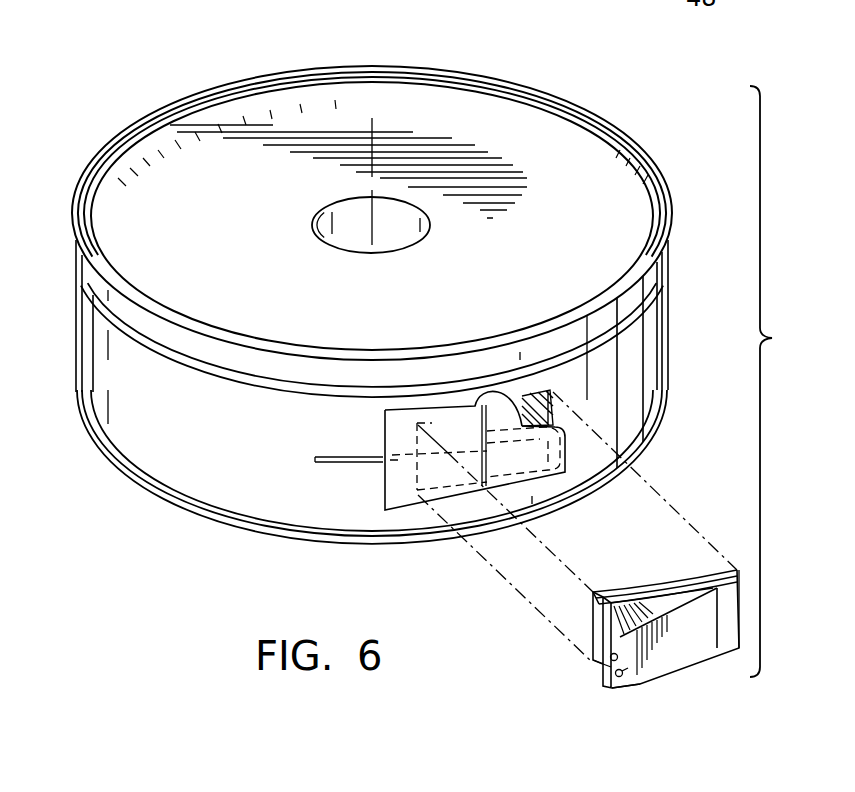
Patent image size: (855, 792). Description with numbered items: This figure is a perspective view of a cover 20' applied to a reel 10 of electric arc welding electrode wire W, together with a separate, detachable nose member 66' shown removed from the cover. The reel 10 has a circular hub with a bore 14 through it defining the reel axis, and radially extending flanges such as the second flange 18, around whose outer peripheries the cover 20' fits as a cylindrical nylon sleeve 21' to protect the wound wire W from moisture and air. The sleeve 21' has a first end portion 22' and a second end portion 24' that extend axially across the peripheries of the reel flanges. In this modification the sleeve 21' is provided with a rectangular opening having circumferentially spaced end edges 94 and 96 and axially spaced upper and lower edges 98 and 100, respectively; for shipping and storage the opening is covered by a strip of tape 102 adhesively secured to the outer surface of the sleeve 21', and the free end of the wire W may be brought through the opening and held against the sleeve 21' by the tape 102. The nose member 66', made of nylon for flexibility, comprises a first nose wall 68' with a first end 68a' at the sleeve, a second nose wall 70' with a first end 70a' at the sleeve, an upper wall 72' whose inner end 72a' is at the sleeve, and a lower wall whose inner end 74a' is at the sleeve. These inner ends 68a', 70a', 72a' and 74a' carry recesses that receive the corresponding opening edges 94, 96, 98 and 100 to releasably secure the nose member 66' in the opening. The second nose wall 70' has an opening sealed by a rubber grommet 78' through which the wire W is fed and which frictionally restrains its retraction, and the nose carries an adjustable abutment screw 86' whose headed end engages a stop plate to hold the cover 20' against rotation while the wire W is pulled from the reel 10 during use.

The reel 10 is at (450, 118).
The second flange 18 is at (540, 147).
The bore 14 is at (337, 236).
The second end portion 24' is at (372, 393).
The sleeve 21' is at (372, 397).
The cover 20' is at (188, 571).
The first end portion 22' is at (408, 467).
The electric arc welding electrode wire W is at (335, 463).
The strip of tape 102 is at (398, 502).
The lower edge 100 is at (455, 491).
The end edge 96 is at (416, 436).
The upper edge 98 is at (454, 416).
The end edge 94 is at (540, 396).
The nose member 66' is at (671, 661).
The inner end of upper wall 72a' is at (665, 557).
The upper wall 72' is at (664, 591).
The grommet 78' is at (616, 592).
The first nose wall 68' is at (715, 669).
The first end of first nose wall 68a' is at (794, 609).
The second nose wall 70' is at (648, 712).
The first end of second nose wall 70a' is at (537, 657).
The adjustable abutment screw 86' is at (611, 709).
The inner end of lower wall 74a' is at (565, 705).